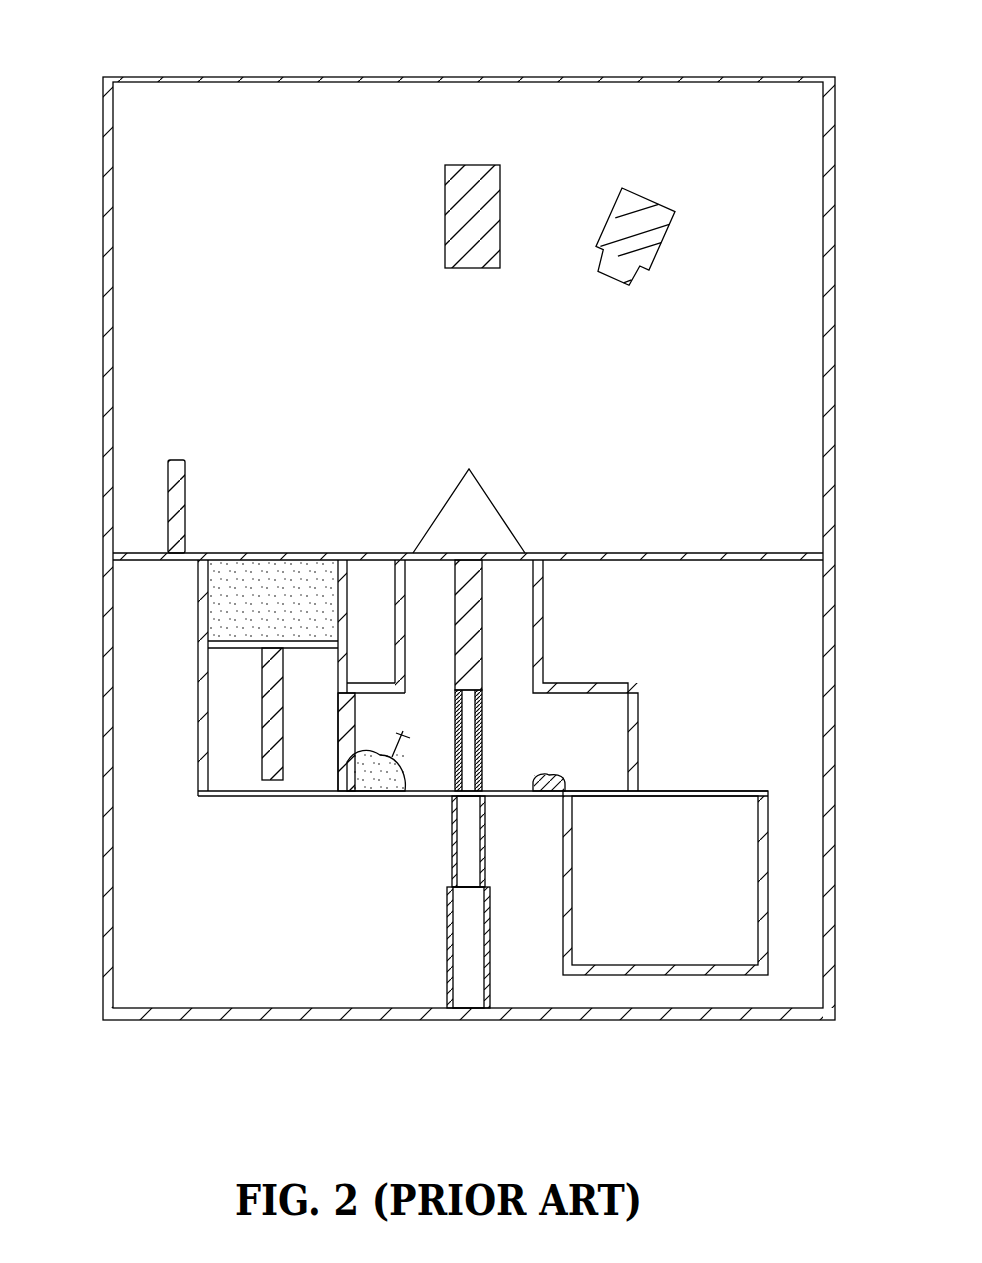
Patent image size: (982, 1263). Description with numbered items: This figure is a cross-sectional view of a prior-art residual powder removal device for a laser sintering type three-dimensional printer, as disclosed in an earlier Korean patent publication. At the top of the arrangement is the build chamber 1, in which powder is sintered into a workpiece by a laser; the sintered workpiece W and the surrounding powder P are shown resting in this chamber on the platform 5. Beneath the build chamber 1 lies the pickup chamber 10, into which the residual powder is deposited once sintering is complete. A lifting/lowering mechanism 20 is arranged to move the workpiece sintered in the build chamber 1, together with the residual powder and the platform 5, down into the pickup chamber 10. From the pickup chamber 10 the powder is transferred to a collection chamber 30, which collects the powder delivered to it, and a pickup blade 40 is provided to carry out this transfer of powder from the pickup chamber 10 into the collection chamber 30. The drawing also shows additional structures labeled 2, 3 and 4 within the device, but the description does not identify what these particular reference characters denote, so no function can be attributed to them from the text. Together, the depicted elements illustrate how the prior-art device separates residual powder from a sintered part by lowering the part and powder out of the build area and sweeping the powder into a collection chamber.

The build chamber 1 is at (504, 626).
The hopper 2 is at (270, 694).
The partition plate 3 is at (168, 496).
The blast nozzles 4 is at (632, 215).
The platform 5 is at (545, 600).
The pickup chamber 10 is at (380, 797).
The lifting/lowering mechanism 20 is at (447, 840).
The collection chamber 30 is at (677, 903).
The pickup blade 40 is at (352, 750).
The particles P is at (293, 583).
The workpiece W is at (458, 527).